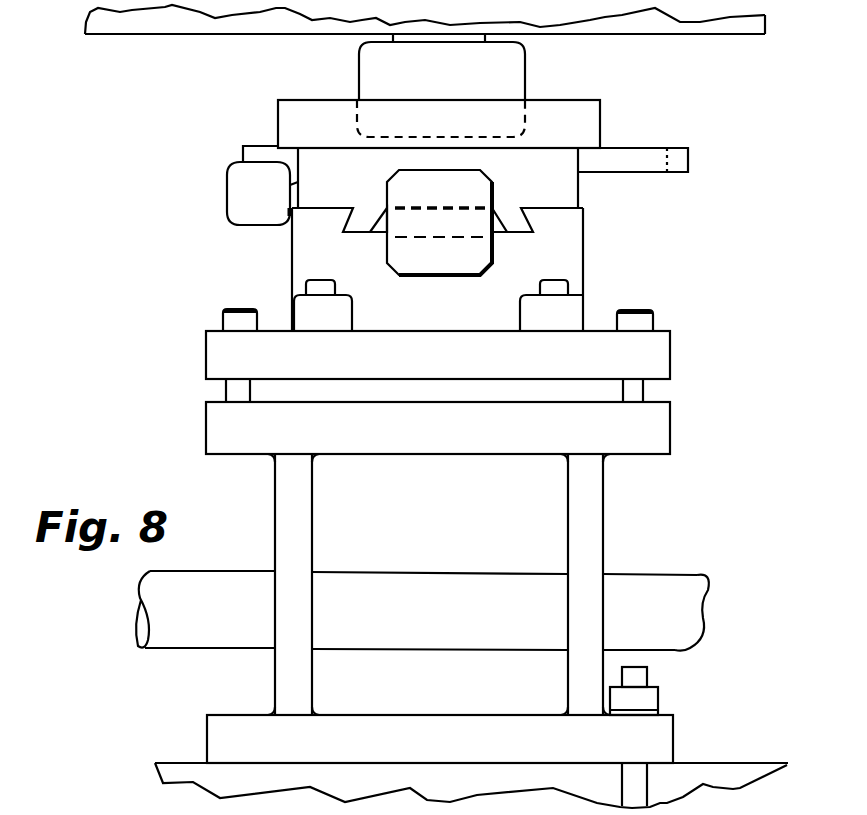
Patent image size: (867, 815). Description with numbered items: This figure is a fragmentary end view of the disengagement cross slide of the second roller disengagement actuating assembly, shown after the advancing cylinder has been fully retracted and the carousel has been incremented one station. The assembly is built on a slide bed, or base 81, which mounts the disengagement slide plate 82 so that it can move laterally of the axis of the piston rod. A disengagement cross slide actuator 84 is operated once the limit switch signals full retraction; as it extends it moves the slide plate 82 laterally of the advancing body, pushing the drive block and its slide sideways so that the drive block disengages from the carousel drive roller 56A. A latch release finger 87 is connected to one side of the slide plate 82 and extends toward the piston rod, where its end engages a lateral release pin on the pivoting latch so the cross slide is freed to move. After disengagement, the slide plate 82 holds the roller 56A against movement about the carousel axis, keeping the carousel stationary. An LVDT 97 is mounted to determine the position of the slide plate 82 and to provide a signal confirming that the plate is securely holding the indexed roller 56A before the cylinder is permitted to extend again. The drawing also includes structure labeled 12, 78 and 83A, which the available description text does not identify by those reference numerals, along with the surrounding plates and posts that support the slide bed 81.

The deck plate 12 is at (229, 36).
The carousel drive roller 56A is at (366, 79).
The disengagement slide plate 82 is at (588, 121).
The latch release finger 87 is at (640, 172).
The slide bed 81 is at (568, 236).
The disengagement cross slide actuator 84 is at (447, 258).
The LVDT 97 is at (259, 216).
The shaft tube 78 is at (422, 693).
The base plate 83A is at (490, 741).